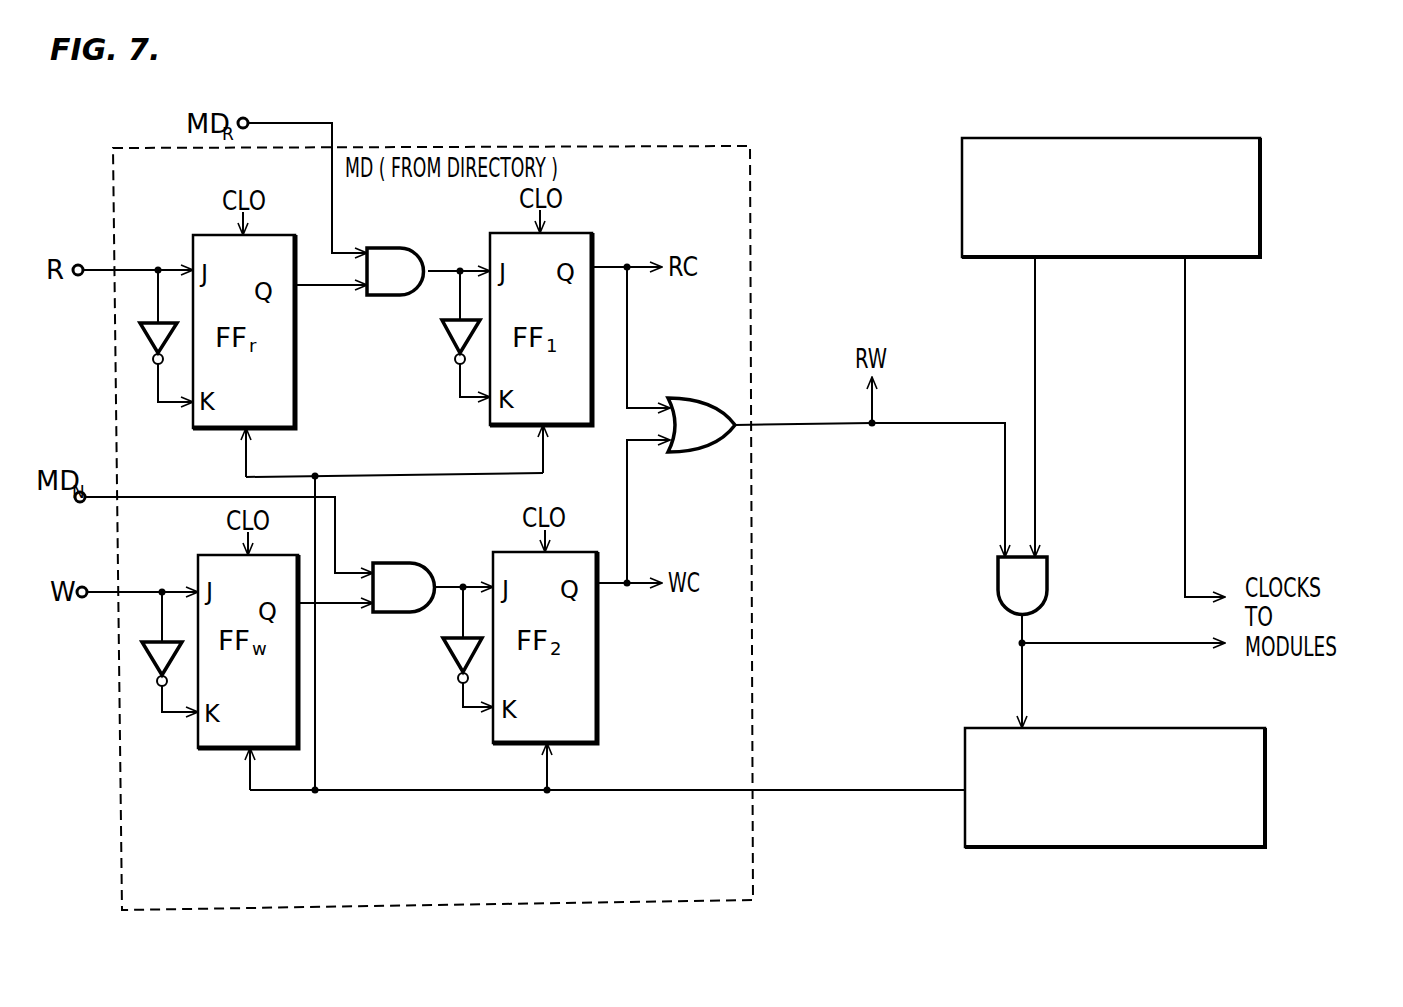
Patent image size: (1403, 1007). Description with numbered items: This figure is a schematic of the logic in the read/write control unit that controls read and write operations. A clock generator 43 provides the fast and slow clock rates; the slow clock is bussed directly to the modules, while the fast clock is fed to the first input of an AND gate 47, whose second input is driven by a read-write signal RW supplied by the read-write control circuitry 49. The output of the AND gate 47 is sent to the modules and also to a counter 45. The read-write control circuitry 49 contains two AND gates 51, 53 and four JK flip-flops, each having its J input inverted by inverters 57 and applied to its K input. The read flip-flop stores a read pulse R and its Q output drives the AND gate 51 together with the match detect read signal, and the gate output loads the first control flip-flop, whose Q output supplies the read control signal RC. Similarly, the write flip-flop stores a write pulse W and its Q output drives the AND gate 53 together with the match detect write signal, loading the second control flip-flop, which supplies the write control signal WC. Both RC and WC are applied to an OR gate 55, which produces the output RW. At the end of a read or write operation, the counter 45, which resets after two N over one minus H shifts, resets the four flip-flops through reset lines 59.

The clock generator 43 is at (962, 217).
The counter 45 is at (965, 827).
The AND gate 47 is at (1034, 595).
The read-write control circuitry 49 is at (752, 608).
The AND gate 51 is at (401, 286).
The AND gate 53 is at (406, 603).
The OR gate 55 is at (706, 439).
The inverters 57 is at (150, 321).
The reset lines 59 is at (247, 458).